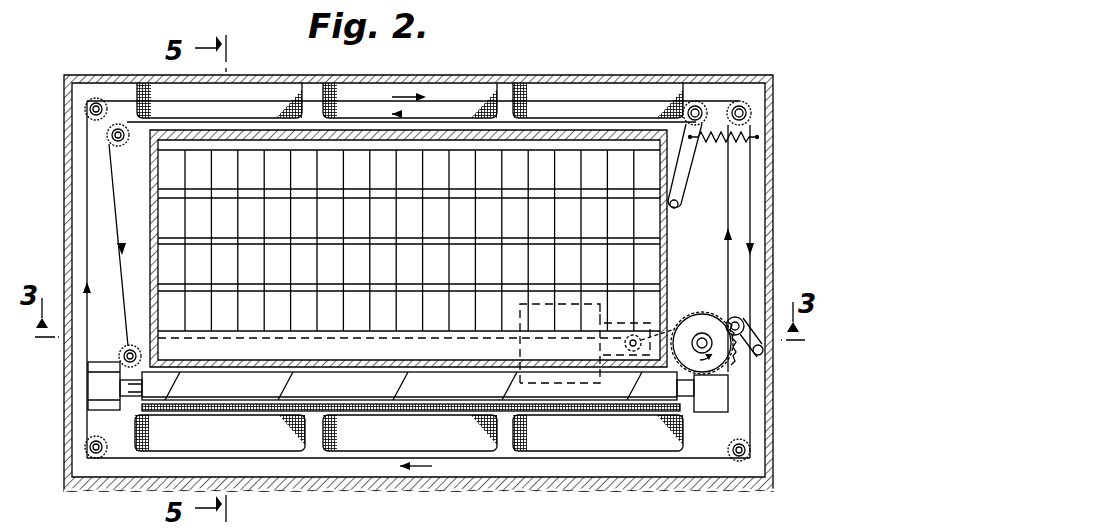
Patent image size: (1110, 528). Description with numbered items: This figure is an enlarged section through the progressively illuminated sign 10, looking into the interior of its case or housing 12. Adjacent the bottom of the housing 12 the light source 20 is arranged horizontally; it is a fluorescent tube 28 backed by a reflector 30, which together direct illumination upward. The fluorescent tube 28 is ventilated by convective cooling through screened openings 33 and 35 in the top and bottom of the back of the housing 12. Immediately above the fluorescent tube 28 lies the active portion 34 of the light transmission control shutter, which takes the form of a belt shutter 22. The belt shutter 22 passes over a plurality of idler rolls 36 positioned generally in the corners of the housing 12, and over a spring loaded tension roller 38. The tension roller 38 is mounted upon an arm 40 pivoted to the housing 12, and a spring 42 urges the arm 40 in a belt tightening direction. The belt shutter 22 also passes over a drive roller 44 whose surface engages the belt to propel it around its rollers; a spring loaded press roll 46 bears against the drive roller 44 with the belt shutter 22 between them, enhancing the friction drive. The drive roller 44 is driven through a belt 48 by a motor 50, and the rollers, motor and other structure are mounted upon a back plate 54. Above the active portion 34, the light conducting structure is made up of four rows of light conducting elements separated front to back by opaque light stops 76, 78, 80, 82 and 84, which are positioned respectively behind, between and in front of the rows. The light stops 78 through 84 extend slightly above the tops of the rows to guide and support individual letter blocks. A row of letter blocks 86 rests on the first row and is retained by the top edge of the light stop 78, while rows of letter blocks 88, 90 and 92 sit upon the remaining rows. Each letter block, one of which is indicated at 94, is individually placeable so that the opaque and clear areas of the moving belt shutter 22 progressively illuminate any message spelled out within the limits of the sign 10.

The progressively illuminated sign 10 is at (550, 76).
The housing 12 is at (709, 77).
The light source 20 is at (262, 400).
The belt shutter 22 is at (95, 202).
The fluorescent tube 28 is at (442, 394).
The reflector 30 is at (197, 412).
The screened opening 33 is at (448, 90).
The active portion 34 is at (353, 358).
The screened opening 35 is at (528, 440).
The idler rolls 36 is at (86, 115).
The tension roller 38 is at (694, 100).
The arm 40 is at (690, 172).
The spring 42 is at (757, 142).
The drive roller 44 is at (703, 318).
The press roll 46 is at (742, 321).
The belt 48 is at (672, 327).
The motor 50 is at (585, 384).
The back plate 54 is at (98, 229).
The light stop 76 is at (160, 145).
The light stop 78 is at (166, 191).
The light stop 80 is at (165, 239).
The light stop 82 is at (168, 284).
The light stop 84 is at (310, 346).
The row of letter blocks 86 is at (334, 155).
The row of letter blocks 88 is at (618, 223).
The row of letter blocks 90 is at (625, 267).
The row of letter blocks 92 is at (164, 298).
The letter block 94 is at (202, 155).